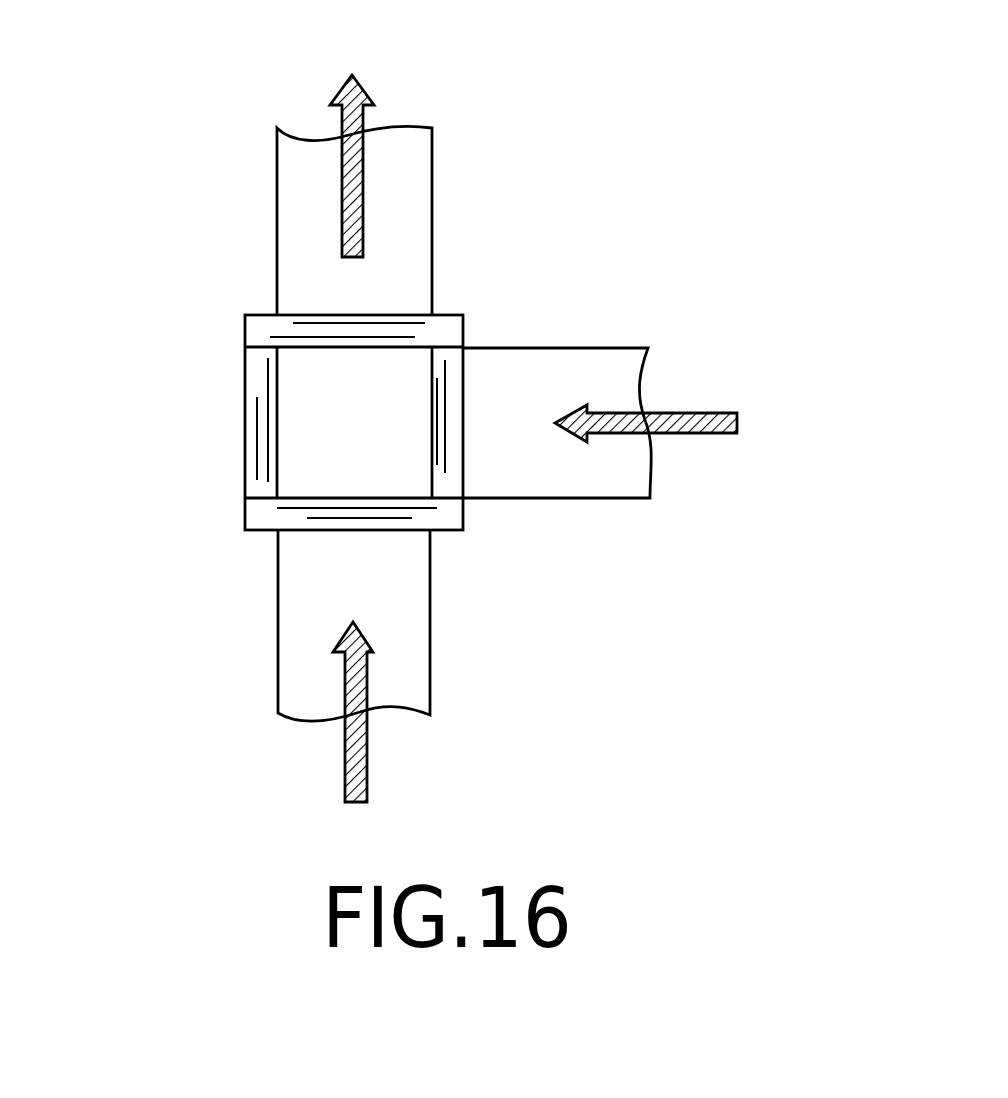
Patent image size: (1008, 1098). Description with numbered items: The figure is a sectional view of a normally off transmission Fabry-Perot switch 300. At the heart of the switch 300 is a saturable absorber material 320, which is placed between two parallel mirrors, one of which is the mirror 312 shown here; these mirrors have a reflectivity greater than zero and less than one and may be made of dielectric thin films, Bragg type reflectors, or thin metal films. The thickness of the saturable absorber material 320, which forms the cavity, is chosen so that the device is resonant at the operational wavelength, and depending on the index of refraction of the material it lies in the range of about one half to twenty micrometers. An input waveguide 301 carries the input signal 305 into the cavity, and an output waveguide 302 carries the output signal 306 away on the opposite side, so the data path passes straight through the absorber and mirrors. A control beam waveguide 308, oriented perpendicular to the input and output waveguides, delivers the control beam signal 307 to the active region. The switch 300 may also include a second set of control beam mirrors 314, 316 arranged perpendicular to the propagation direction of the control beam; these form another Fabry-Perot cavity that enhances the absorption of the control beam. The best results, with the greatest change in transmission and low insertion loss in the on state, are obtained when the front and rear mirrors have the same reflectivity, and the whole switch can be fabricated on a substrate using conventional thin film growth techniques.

The switch 300 is at (597, 210).
The input waveguide 301 is at (393, 677).
The output waveguide 302 is at (395, 248).
The input signal 305 is at (370, 758).
The output signal 306 is at (360, 90).
The control beam signal 307 is at (693, 440).
The control beam waveguide 308 is at (550, 397).
The mirror 312 is at (290, 330).
The control beam mirror 314 is at (447, 460).
The control beam mirror 316 is at (260, 472).
The saturable absorber material 320 is at (340, 418).